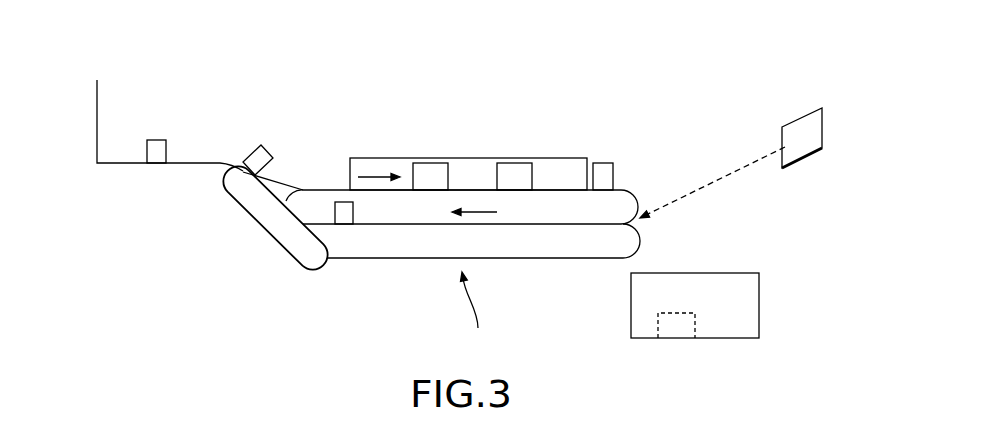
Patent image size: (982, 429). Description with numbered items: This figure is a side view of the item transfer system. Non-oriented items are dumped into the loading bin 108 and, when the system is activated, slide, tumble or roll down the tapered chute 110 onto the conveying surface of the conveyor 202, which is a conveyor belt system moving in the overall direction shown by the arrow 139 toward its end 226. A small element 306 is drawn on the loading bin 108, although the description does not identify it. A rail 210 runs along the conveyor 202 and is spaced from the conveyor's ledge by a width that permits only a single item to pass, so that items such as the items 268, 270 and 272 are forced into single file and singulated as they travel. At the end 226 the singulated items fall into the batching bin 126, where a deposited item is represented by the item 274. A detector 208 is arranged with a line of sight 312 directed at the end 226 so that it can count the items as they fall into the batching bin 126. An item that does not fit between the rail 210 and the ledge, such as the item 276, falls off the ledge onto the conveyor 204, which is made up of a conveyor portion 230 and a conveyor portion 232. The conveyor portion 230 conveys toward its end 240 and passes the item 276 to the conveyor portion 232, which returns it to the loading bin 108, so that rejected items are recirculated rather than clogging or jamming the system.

The loading bin 108 is at (105, 170).
The media sensor 306 is at (166, 148).
The tapered chute 110 is at (278, 178).
The end 240 is at (316, 240).
The conveyor portion 232 is at (286, 258).
The rail 210 is at (565, 158).
The arrow 139 is at (368, 177).
The item 268 is at (431, 163).
The item 270 is at (512, 163).
The item 272 is at (604, 163).
The conveyor 202 is at (605, 182).
The end 226 is at (637, 197).
The conveyor portion 230 is at (562, 260).
The conveyor 204 is at (480, 316).
The item 276 is at (354, 206).
The line of sight 312 is at (720, 178).
The detector 208 is at (800, 117).
The batching bin 126 is at (759, 312).
The item 274 is at (692, 318).